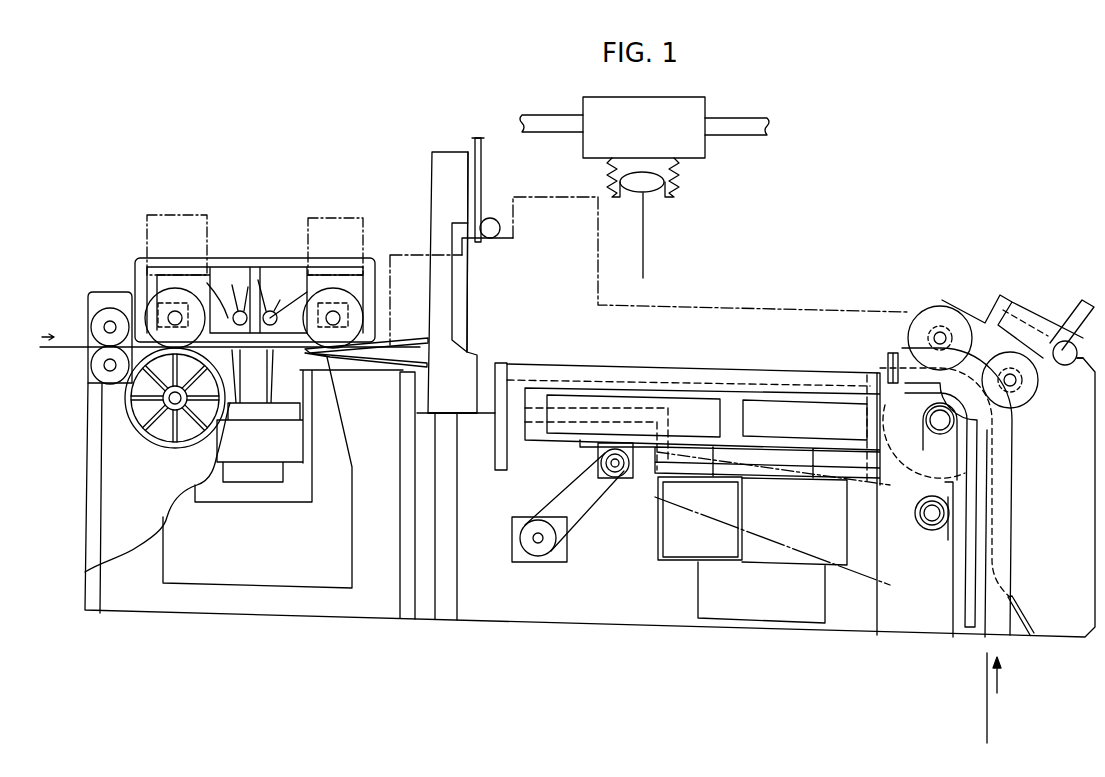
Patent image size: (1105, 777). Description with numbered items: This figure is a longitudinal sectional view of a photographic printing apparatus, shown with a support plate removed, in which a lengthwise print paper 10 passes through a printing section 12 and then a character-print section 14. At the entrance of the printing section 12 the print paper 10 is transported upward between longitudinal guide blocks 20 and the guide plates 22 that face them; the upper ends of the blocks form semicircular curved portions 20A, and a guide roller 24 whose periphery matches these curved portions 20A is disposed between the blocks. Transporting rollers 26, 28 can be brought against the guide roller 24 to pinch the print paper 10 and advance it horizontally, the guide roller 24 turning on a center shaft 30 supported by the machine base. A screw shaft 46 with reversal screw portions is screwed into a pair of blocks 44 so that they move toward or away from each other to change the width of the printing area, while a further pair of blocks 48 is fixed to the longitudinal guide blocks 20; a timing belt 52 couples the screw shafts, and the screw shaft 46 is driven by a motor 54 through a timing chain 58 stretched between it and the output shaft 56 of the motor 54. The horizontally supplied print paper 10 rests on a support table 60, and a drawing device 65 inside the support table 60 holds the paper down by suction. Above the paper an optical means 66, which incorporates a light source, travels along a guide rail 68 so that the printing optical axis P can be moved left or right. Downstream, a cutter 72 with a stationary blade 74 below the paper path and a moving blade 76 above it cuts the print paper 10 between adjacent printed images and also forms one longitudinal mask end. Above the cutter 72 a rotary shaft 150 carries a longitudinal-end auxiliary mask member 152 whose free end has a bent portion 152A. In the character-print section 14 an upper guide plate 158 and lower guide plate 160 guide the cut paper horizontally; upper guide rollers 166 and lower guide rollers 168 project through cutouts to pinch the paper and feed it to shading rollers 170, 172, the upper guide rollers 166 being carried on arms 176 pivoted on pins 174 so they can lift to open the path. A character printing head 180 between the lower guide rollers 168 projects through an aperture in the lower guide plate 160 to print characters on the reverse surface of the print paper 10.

The print paper 10 is at (990, 713).
The printing section 12 is at (830, 290).
The character-print section 14 is at (271, 254).
The longitudinal guide blocks 20 is at (948, 630).
The curved portions 20A is at (982, 430).
The guide plates 22 is at (1026, 611).
The guide roller 24 is at (788, 471).
The transporting roller 26 is at (1033, 396).
The transporting roller 28 is at (913, 328).
The center shaft 30 is at (940, 428).
The blocks 44 is at (630, 478).
The screw shaft 46 is at (598, 462).
The blocks 48 is at (937, 531).
The timing belt 52 is at (893, 588).
The motor 54 is at (520, 560).
The output shaft 56 is at (547, 548).
The timing chain 58 is at (577, 527).
The support table 60 is at (728, 370).
The drawing device 65 is at (767, 617).
The optical means 66 is at (690, 148).
The guide rail 68 is at (737, 120).
The cutter 72 is at (430, 213).
The stationary blade 74 is at (466, 397).
The moving blade 76 is at (468, 323).
The rotary shaft 150 is at (494, 238).
The longitudinal-end auxiliary mask member 152 is at (481, 185).
The bent portion 152A is at (477, 137).
The upper guide plate 158 is at (408, 343).
The lower guide plate 160 is at (402, 368).
The upper guide rollers 166 is at (197, 286).
The lower guide rollers 168 is at (138, 433).
The shading roller 170 is at (110, 307).
The shading roller 172 is at (92, 373).
The pins 174 is at (277, 309).
The arms 176 is at (209, 283).
The character printing head 180 is at (272, 384).
The printing optical axis P is at (646, 238).